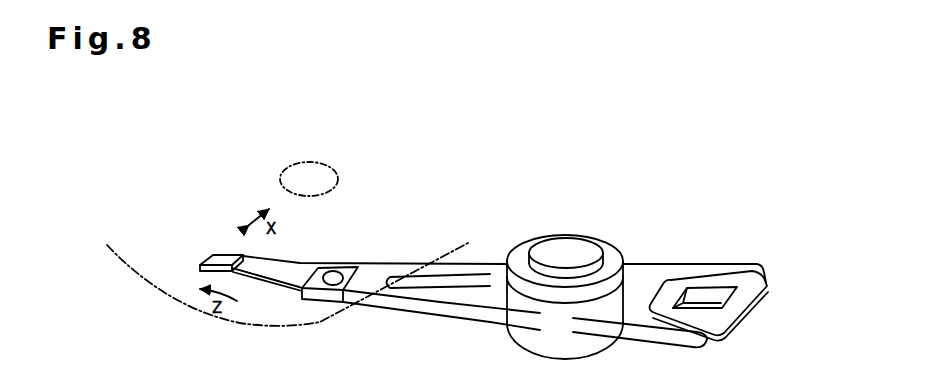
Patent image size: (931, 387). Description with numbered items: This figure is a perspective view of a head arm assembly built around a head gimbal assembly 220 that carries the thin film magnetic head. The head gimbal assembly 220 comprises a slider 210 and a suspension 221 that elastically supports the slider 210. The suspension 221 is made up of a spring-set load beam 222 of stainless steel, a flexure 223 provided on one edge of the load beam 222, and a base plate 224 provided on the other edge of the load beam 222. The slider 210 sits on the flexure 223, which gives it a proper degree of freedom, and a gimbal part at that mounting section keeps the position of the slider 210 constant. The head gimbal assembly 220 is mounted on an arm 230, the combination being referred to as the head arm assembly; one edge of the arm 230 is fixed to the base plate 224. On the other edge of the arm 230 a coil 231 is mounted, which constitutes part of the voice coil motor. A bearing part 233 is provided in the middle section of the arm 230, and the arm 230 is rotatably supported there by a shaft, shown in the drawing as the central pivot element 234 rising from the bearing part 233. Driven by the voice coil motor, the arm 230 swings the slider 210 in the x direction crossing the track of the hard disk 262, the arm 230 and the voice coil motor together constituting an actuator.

The slider 210 is at (225, 260).
The head gimbal assembly 220 is at (293, 307).
The suspension 221 is at (295, 236).
The load beam 222 is at (309, 266).
The flexure 223 is at (207, 264).
The base plate 224 is at (358, 268).
The arm 230 is at (412, 307).
The coil 231 is at (751, 316).
The bearing part 233 is at (523, 247).
The pivot shaft 234 is at (576, 248).
The hard disk 262 is at (233, 324).